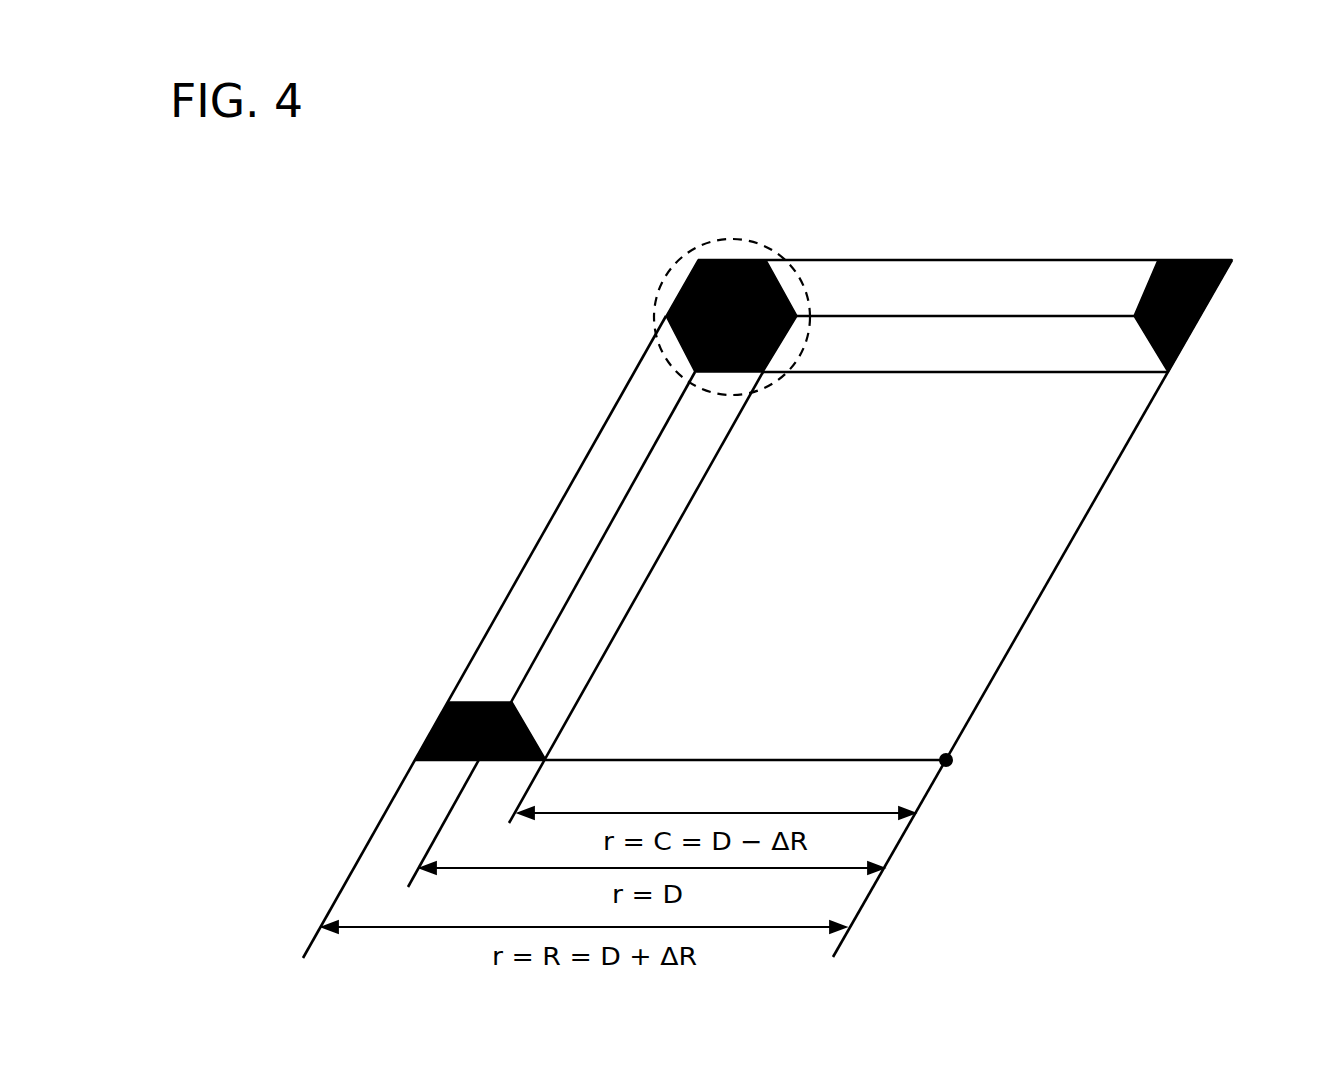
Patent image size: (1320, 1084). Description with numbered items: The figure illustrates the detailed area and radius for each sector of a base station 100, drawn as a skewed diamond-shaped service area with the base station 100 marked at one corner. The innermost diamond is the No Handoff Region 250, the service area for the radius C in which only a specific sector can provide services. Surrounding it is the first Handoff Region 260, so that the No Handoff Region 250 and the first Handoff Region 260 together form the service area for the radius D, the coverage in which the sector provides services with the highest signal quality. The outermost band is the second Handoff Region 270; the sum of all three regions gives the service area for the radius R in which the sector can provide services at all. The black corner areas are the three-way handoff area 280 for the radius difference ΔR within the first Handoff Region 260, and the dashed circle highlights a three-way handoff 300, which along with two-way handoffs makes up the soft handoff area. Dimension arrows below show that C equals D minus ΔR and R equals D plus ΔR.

The base station 100 is at (953, 753).
The No Handoff Region 250 is at (1033, 533).
The Handoff Region 1 260 is at (1092, 353).
The Handoff Region 2 270 is at (955, 268).
The 3-way handoff area 280 is at (690, 352).
The 3-way handoff 300 is at (737, 242).